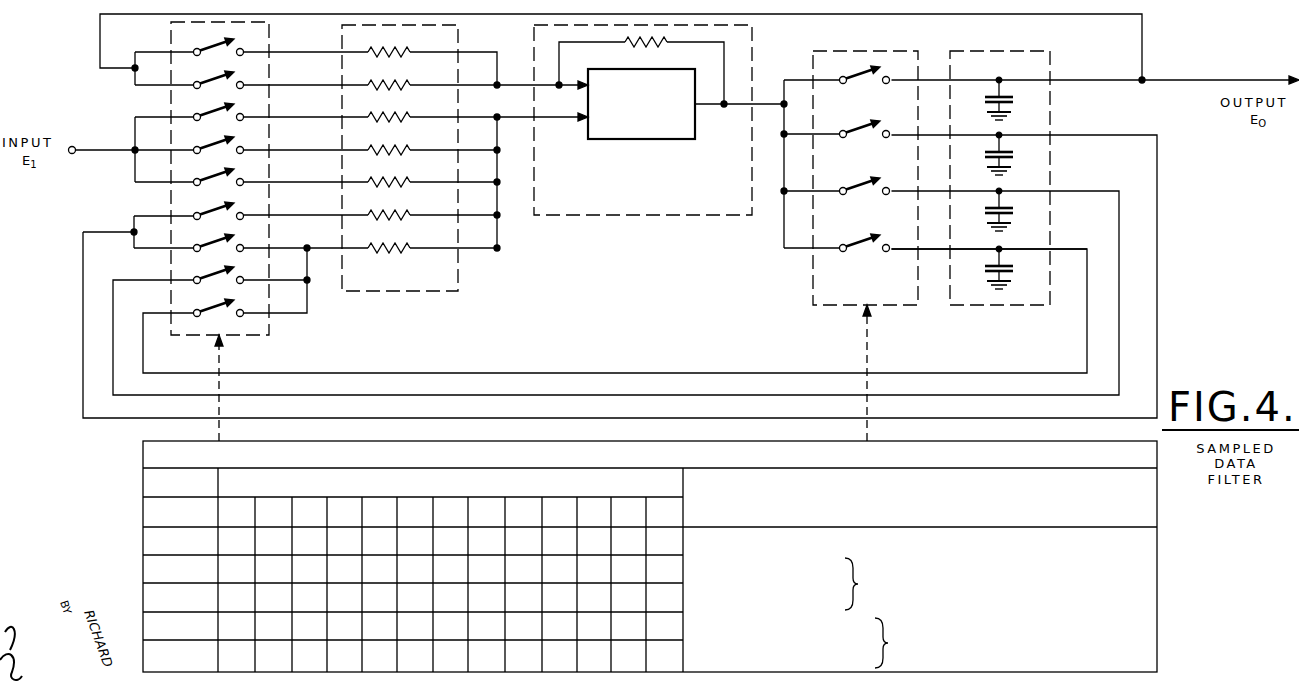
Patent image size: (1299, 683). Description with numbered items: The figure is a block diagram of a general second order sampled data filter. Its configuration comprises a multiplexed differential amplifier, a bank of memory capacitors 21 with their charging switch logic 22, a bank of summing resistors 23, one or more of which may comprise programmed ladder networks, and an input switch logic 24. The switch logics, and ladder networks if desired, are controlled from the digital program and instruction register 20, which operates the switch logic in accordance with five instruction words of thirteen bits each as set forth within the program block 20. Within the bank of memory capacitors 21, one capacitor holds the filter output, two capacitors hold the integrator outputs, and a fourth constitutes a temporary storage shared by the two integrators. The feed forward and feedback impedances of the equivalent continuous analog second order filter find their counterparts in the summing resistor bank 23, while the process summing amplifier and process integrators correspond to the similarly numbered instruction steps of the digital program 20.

The digital program and instruction register 20 is at (638, 216).
The bank of memory capacitors 21 is at (995, 50).
The charging switch logic 22 is at (872, 50).
The bank of summing resistors 23 is at (458, 37).
The input switch logic 24 is at (269, 37).